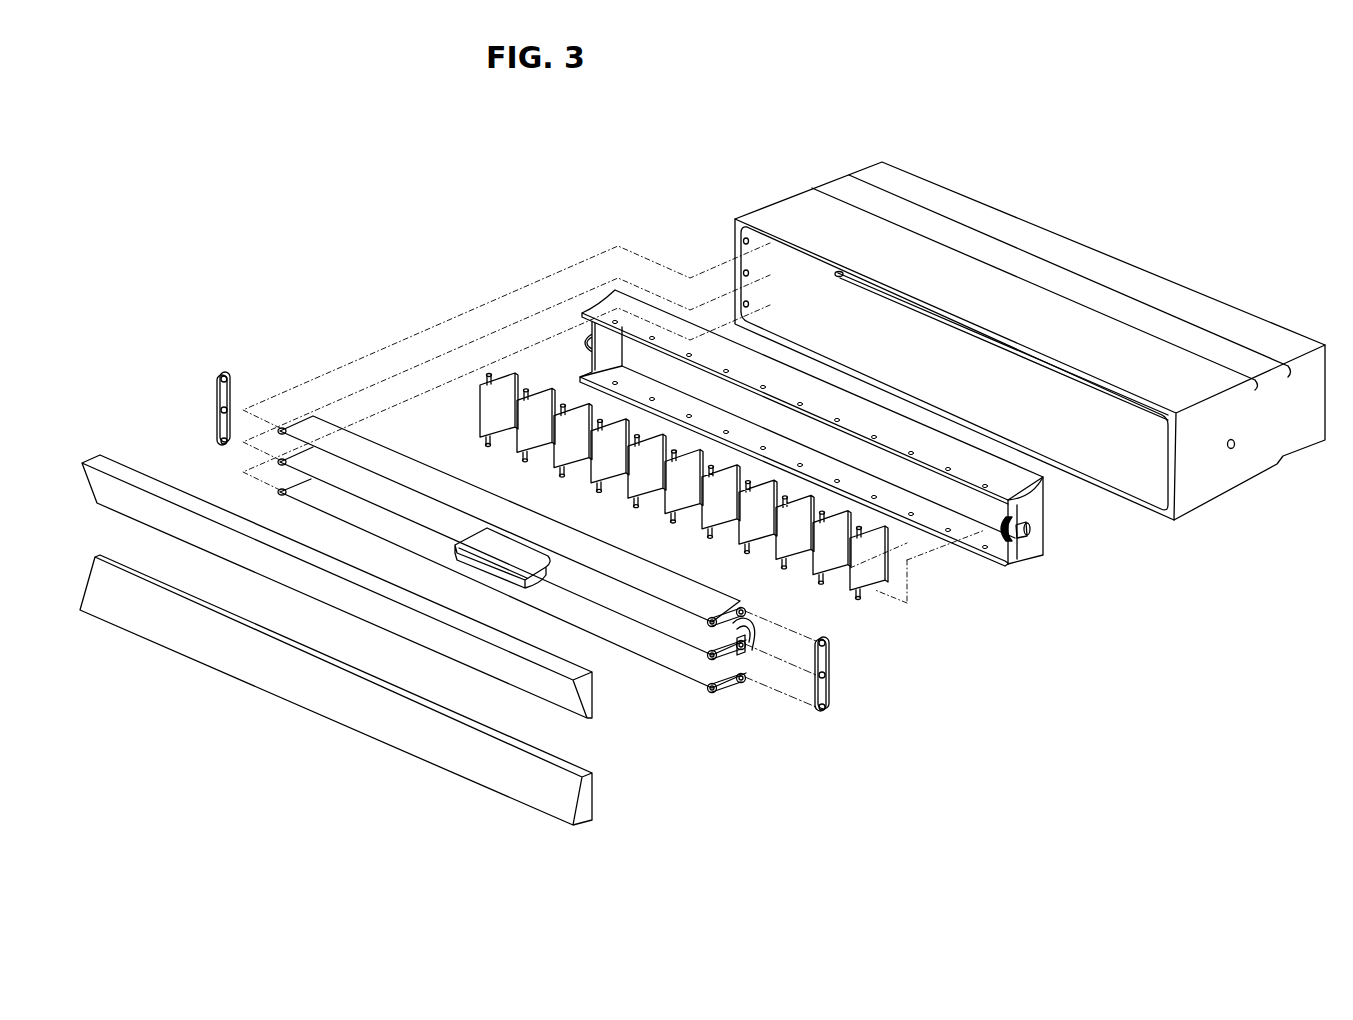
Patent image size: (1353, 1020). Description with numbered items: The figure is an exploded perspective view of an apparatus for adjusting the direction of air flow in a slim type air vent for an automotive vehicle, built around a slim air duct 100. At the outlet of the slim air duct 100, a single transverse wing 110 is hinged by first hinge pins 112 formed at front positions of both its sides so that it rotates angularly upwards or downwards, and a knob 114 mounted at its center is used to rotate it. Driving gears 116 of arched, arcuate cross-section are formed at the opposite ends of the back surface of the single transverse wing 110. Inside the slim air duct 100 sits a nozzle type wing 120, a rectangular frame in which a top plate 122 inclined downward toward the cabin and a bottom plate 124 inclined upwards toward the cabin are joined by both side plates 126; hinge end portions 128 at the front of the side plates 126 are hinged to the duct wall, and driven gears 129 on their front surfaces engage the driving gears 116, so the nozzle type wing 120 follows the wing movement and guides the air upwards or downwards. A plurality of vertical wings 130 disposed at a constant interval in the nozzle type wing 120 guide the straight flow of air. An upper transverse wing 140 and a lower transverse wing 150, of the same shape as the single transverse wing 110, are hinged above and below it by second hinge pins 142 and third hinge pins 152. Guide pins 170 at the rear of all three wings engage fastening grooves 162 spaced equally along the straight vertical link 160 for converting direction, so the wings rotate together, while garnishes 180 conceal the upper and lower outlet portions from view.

The slim air duct 100 is at (1149, 516).
The single transverse wing 110 is at (678, 628).
The first hinge pins 112 is at (740, 672).
The knob 114 is at (496, 560).
The driving gears 116 is at (755, 631).
The nozzle type wing 120 is at (848, 459).
The top plate 122 is at (1023, 482).
The bottom plate 124 is at (998, 552).
The side plates 126 is at (1037, 540).
The hinge end portions 128 is at (1021, 540).
The driven gears 129 is at (1021, 515).
The vertical wings 130 is at (886, 592).
The upper transverse wing 140 is at (672, 583).
The second hinge pins 142 is at (733, 607).
The lower transverse wing 150 is at (697, 670).
The third hinge pins 152 is at (722, 690).
The vertical link for converting direction 160 is at (834, 713).
The fastening grooves 162 is at (832, 707).
The guide pins 170 is at (746, 610).
The garnishes 180 is at (573, 787).